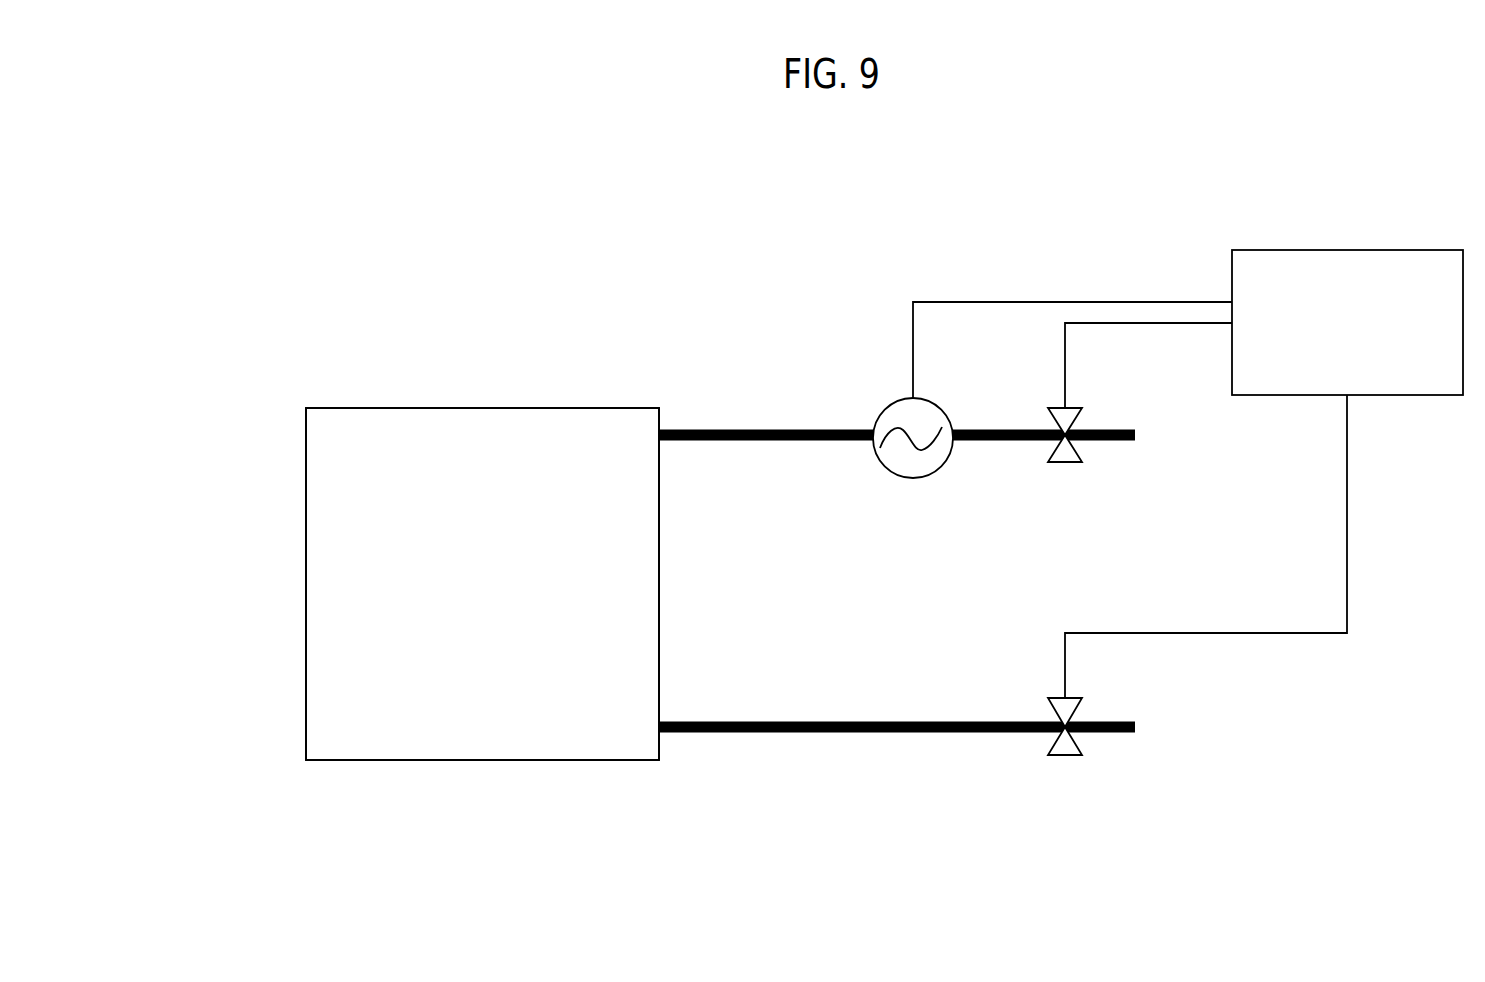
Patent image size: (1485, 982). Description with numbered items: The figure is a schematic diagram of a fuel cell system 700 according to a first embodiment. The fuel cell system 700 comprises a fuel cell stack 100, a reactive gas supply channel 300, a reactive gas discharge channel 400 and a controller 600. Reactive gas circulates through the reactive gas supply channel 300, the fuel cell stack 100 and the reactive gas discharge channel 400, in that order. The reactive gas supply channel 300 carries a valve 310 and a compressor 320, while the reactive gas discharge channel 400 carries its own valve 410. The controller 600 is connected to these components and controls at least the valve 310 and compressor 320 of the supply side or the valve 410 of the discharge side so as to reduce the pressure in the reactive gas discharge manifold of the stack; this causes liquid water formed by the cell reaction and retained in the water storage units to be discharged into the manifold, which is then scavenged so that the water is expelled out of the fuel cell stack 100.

The fuel cell system 700 is at (267, 622).
The fuel cell stack 100 is at (320, 517).
The reactive gas supply channel 300 is at (808, 430).
The compressor 320 is at (902, 418).
The valve 310 is at (1068, 462).
The reactive gas discharge channel 400 is at (840, 732).
The valve 410 is at (1068, 743).
The controller 600 is at (1383, 280).